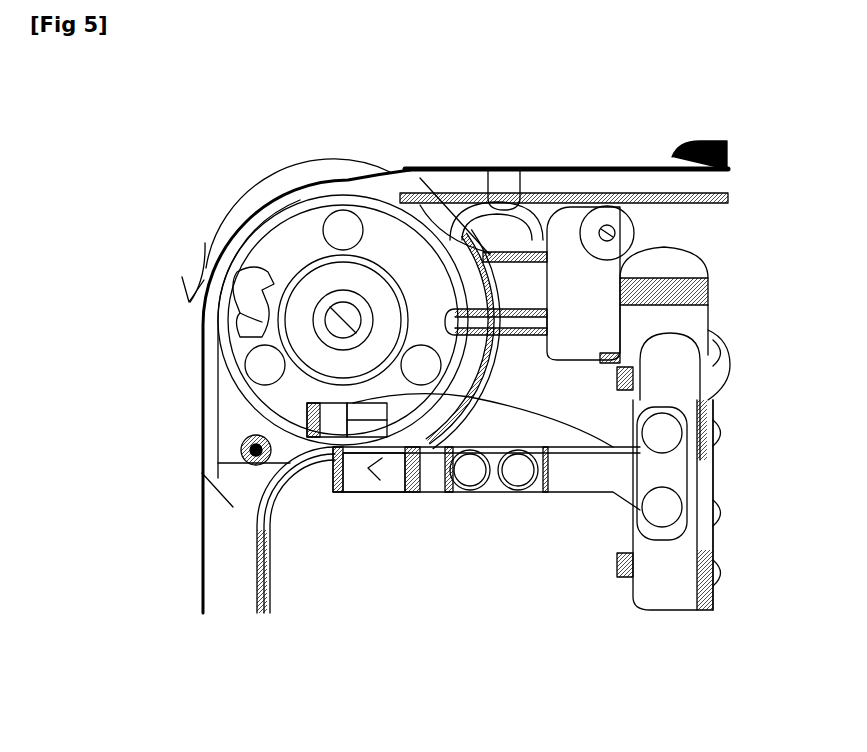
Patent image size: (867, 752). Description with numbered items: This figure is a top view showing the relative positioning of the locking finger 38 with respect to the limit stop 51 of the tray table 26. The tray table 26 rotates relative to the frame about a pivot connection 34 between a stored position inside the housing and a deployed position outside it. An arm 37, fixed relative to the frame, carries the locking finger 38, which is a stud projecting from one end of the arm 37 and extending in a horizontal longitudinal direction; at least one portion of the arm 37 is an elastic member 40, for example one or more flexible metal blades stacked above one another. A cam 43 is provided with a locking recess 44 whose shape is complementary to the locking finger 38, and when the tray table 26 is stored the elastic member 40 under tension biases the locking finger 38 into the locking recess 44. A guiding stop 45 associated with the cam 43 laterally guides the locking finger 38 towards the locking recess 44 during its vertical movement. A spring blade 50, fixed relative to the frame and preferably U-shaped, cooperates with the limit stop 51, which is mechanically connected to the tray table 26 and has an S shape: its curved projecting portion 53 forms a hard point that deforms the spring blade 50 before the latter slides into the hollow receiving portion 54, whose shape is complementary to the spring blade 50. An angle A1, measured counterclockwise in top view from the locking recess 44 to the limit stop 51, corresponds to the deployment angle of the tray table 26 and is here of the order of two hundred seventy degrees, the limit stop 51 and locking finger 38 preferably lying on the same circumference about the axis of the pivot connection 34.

The tray table 26 is at (297, 572).
The pivot connection 34 is at (356, 304).
The arm 37 is at (430, 477).
The locking finger 38 is at (333, 443).
The elastic member 40 is at (490, 495).
The cam 43 is at (605, 452).
The locking recess 44 is at (370, 470).
The guiding stop 45 is at (310, 408).
The spring blade 50 is at (700, 272).
The limit stop 51 is at (285, 268).
The projecting portion 53 is at (205, 243).
The receiving portion 54 is at (235, 322).
The angle A1 is at (518, 200).